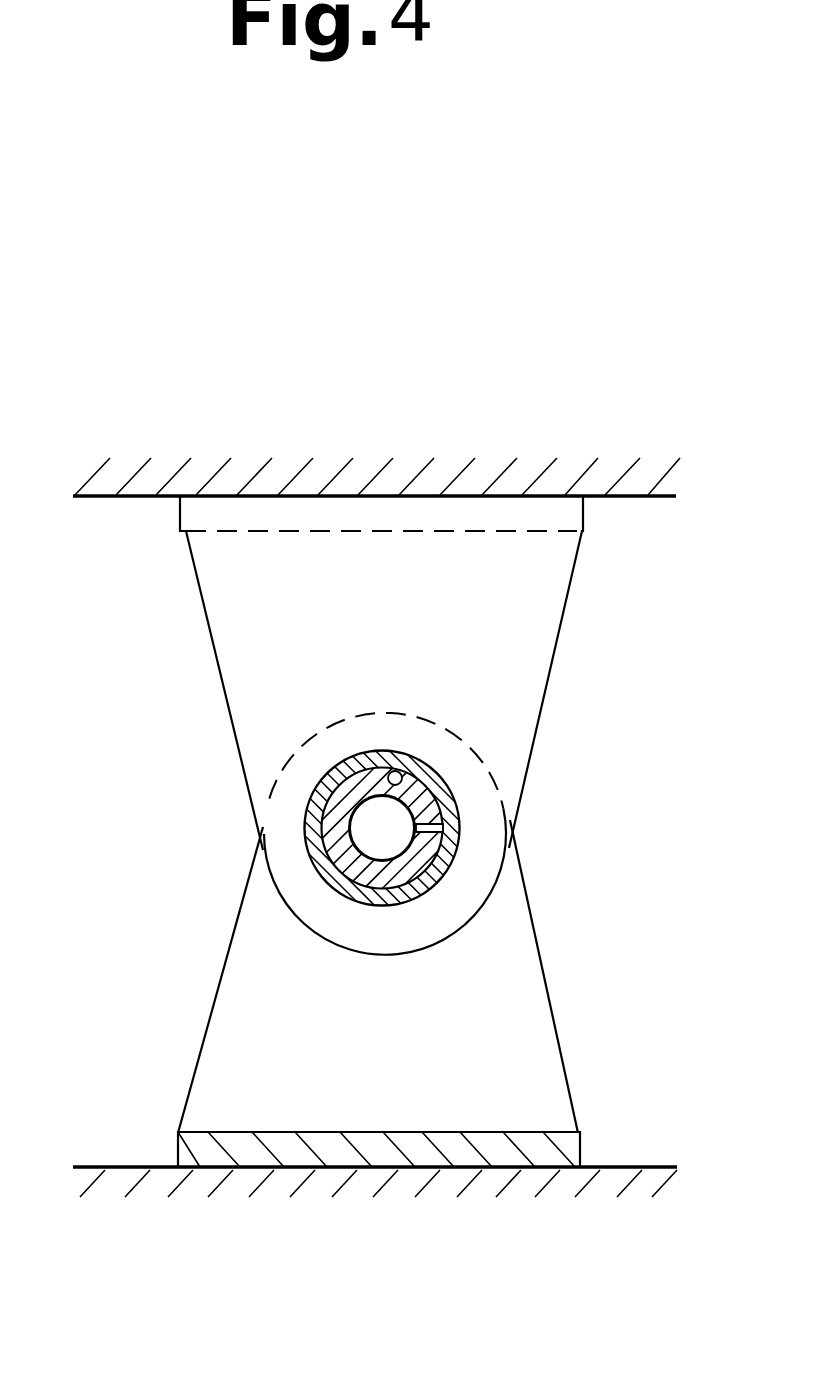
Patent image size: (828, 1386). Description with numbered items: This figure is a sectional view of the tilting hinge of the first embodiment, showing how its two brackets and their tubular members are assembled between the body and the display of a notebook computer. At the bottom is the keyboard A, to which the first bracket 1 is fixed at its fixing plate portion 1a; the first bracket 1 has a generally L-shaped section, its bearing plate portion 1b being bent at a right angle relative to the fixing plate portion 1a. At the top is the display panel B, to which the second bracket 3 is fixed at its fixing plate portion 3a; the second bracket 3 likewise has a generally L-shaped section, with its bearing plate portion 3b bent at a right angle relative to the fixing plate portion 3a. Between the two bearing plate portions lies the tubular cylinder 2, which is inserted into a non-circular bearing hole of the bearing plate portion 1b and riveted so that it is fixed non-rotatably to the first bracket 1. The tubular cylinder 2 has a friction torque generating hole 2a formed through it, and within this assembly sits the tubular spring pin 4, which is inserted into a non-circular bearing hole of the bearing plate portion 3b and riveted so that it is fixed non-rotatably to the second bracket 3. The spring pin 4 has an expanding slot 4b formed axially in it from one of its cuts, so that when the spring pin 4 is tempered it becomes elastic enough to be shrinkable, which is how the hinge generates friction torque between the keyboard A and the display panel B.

The first bracket 1 is at (399, 988).
The fixing plate portion 1a is at (554, 1132).
The bearing plate portion 1b is at (520, 938).
The tubular cylinder 2 is at (443, 797).
The friction torque generating hole 2a is at (404, 775).
The second bracket 3 is at (397, 673).
The fixing plate portion 3a is at (570, 513).
The bearing plate portion 3b is at (545, 659).
The tubular spring pin 4 is at (345, 857).
The expanding slot 4b is at (440, 834).
The keyboard A is at (621, 1167).
The display panel B is at (571, 471).